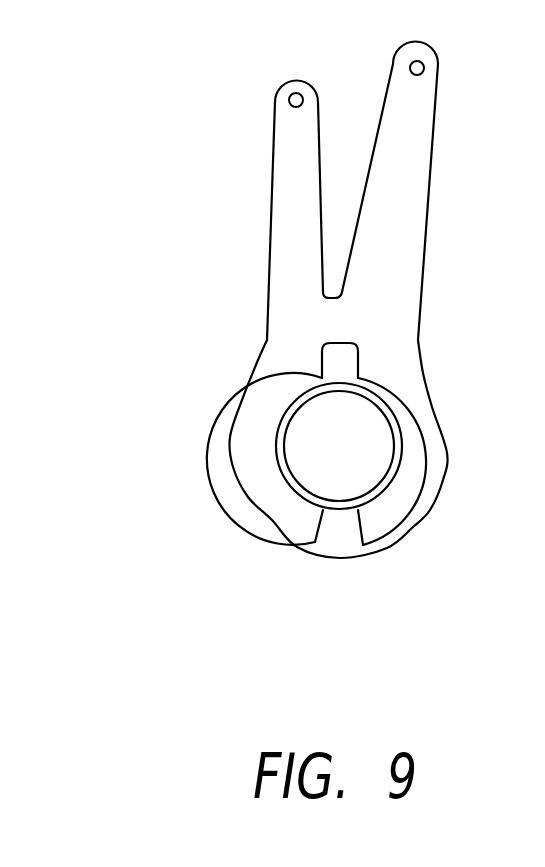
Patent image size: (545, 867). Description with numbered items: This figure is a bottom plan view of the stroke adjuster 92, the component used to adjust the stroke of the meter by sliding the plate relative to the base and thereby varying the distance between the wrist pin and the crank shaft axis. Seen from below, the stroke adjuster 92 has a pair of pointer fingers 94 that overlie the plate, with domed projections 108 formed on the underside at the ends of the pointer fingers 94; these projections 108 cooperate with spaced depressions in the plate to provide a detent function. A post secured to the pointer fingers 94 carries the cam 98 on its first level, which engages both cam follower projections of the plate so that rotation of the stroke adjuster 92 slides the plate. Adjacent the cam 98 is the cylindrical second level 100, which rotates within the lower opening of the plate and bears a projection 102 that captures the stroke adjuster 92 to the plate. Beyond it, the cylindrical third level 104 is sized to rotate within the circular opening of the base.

The stroke adjuster 92 is at (375, 300).
The pointer fingers 94 is at (318, 127).
The cam 98 is at (278, 527).
The second level 100 is at (395, 422).
The projection 102 is at (338, 366).
The third level 104 is at (383, 487).
The domed projections 108 is at (289, 98).